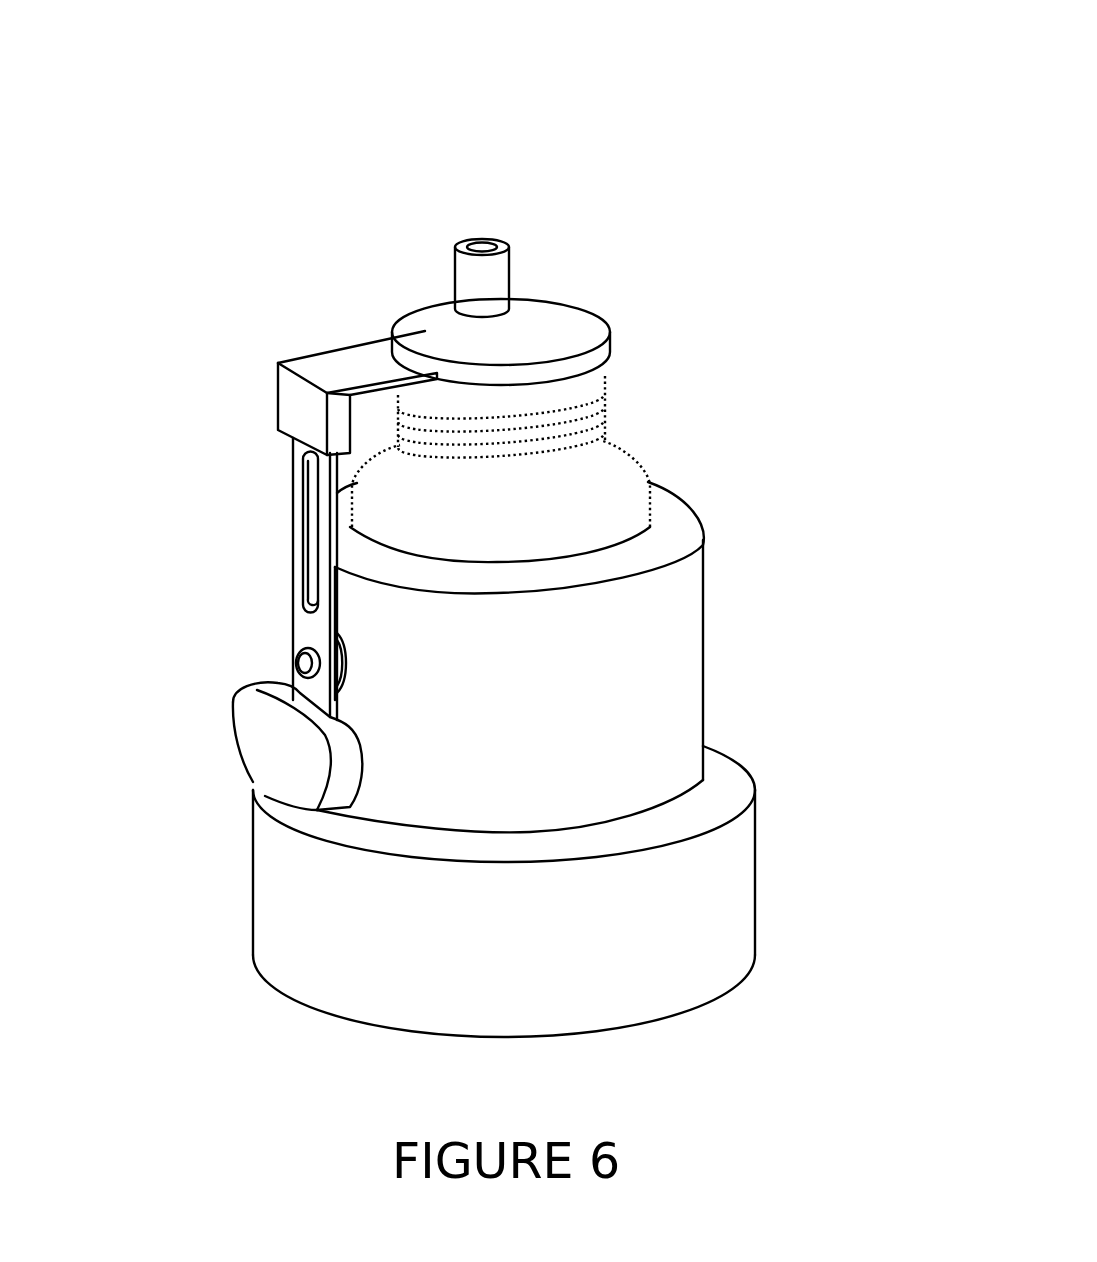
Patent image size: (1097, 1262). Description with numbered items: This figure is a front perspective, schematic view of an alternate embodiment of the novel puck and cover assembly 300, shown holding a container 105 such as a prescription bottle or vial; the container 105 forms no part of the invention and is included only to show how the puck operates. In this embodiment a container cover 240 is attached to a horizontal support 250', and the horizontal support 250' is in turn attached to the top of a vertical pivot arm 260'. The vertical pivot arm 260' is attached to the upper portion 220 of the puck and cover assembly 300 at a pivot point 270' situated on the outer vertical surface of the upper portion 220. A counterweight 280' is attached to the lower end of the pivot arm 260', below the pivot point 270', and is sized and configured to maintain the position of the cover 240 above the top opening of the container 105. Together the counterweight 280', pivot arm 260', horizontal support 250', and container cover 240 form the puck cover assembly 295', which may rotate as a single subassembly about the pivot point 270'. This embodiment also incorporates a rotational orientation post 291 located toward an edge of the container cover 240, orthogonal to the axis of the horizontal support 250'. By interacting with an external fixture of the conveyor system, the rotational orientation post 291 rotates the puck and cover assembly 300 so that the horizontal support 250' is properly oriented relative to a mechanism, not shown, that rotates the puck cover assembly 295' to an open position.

The puck and cover assembly 300 is at (837, 113).
The container 105 is at (590, 500).
The upper portion 220 is at (792, 520).
The container cover 240 is at (432, 322).
The rotational orientation post 291 is at (480, 282).
The puck cover assembly 295' is at (242, 462).
The horizontal support 250' is at (318, 352).
The vertical pivot arm 260' is at (250, 579).
The pivot point 270' is at (229, 614).
The counterweight 280' is at (233, 716).